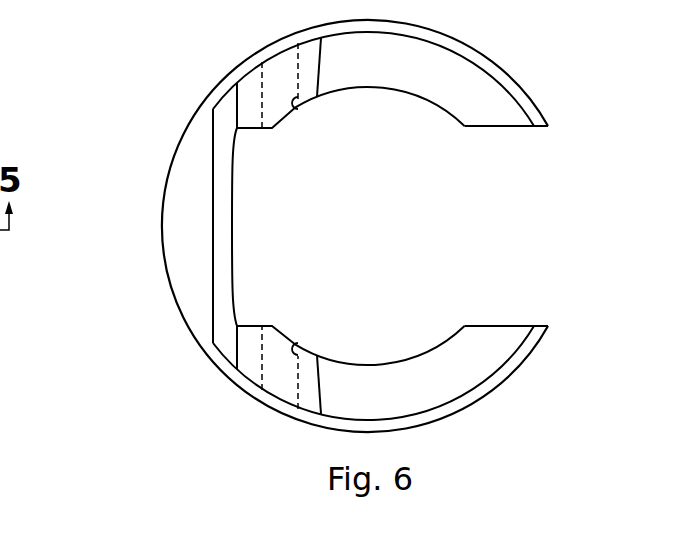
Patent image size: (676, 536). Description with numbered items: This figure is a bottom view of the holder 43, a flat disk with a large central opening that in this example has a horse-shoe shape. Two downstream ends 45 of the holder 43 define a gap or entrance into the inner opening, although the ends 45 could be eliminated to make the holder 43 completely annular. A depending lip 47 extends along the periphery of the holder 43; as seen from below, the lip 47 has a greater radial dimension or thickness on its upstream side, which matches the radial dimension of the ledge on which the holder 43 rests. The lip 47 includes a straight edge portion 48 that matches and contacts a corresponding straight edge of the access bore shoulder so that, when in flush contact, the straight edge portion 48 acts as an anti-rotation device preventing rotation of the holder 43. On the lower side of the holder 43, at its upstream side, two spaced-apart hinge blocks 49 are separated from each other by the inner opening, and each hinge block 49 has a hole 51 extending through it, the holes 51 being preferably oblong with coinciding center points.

The holder 43 is at (507, 77).
The downstream ends 45 is at (507, 127).
The depending lip 47 is at (190, 176).
The straight edge portion 48 is at (228, 174).
The hinge blocks 49 is at (255, 82).
The hole 51 is at (293, 108).